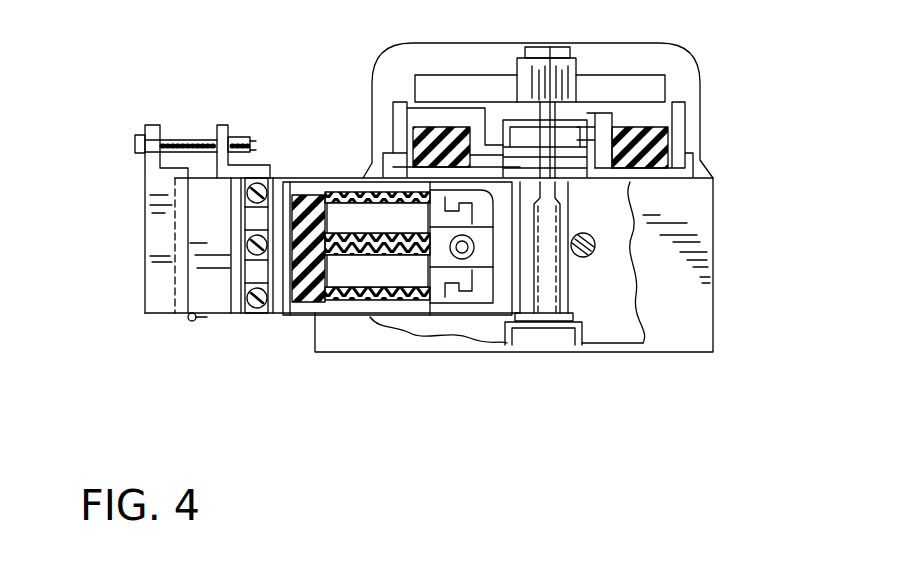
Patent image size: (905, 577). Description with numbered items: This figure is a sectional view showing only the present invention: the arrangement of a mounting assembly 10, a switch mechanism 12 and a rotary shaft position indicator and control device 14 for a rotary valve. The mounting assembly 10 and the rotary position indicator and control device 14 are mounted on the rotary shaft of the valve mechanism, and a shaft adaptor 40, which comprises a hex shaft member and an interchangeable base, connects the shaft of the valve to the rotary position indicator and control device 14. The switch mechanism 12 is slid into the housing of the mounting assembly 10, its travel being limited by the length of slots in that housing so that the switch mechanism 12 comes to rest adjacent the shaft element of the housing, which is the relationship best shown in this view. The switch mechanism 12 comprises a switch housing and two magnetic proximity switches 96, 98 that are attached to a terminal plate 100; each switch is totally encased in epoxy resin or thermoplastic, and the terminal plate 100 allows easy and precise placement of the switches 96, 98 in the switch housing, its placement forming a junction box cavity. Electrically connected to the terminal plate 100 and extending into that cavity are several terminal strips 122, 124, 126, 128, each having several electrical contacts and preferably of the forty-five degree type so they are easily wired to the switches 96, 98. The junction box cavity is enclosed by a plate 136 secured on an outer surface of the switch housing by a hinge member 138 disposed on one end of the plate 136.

The mounting assembly 10 is at (728, 238).
The switch mechanism 12 is at (253, 120).
The rotary shaft position indicator and control device 14 is at (706, 38).
The shaft adaptor 40 is at (512, 362).
The magnetic proximity switch 96 is at (307, 293).
The magnetic proximity switch 98 is at (377, 245).
The terminal plate 100 is at (288, 178).
The terminal strip 122 is at (248, 313).
The terminal strip 124 is at (257, 193).
The terminal strip 126 is at (188, 334).
The terminal strip 128 is at (257, 298).
The plate 136 is at (147, 238).
The hinge member 138 is at (174, 316).